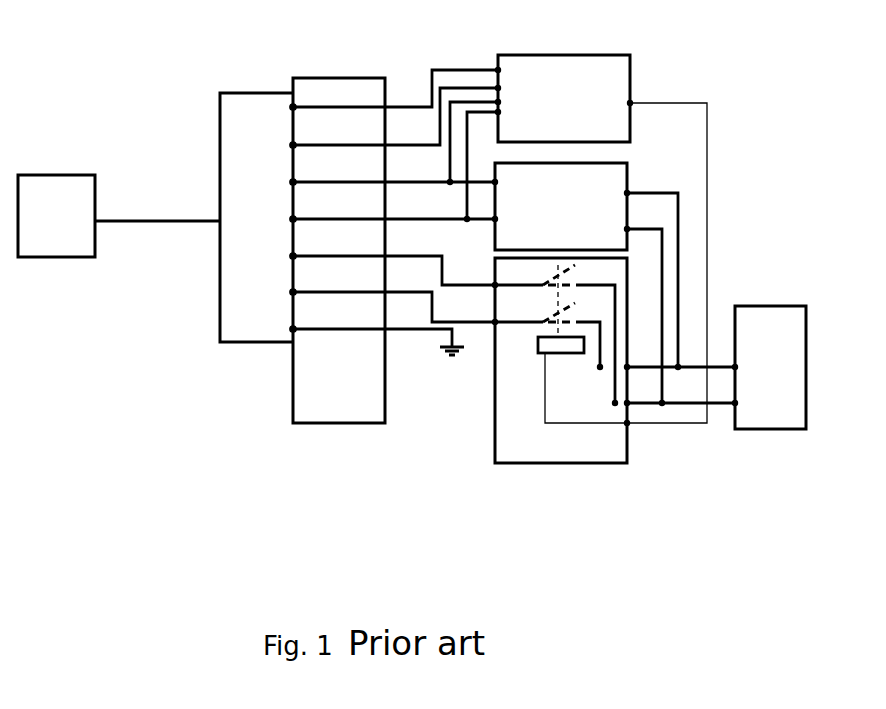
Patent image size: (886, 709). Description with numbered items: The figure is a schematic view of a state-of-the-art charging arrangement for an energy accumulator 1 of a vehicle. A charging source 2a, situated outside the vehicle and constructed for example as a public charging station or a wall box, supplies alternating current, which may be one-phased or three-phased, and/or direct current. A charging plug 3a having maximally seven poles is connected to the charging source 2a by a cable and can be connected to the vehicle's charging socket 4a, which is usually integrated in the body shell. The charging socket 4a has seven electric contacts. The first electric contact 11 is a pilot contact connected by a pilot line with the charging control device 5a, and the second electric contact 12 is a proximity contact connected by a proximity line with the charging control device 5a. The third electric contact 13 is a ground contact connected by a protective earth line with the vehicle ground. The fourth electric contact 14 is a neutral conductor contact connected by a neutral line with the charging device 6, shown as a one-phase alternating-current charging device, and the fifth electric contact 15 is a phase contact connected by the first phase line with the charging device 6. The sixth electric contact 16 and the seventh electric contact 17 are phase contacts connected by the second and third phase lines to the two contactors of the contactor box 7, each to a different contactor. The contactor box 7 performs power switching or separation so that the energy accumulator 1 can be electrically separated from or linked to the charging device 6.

The energy accumulator 1 is at (770, 367).
The charging source 2a is at (119, 216).
The charging plug 3a is at (220, 93).
The charging socket 4a is at (293, 78).
The charging control device 5a is at (564, 98).
The charging device 6 is at (561, 206).
The contactor box 7 is at (561, 360).
The first electric contact 11 is at (293, 107).
The second electric contact 12 is at (293, 145).
The third electric contact 13 is at (293, 329).
The fourth electric contact 14 is at (293, 182).
The fifth electric contact 15 is at (293, 220).
The sixth electric contact 16 is at (293, 256).
The seventh electric contact 17 is at (293, 292).